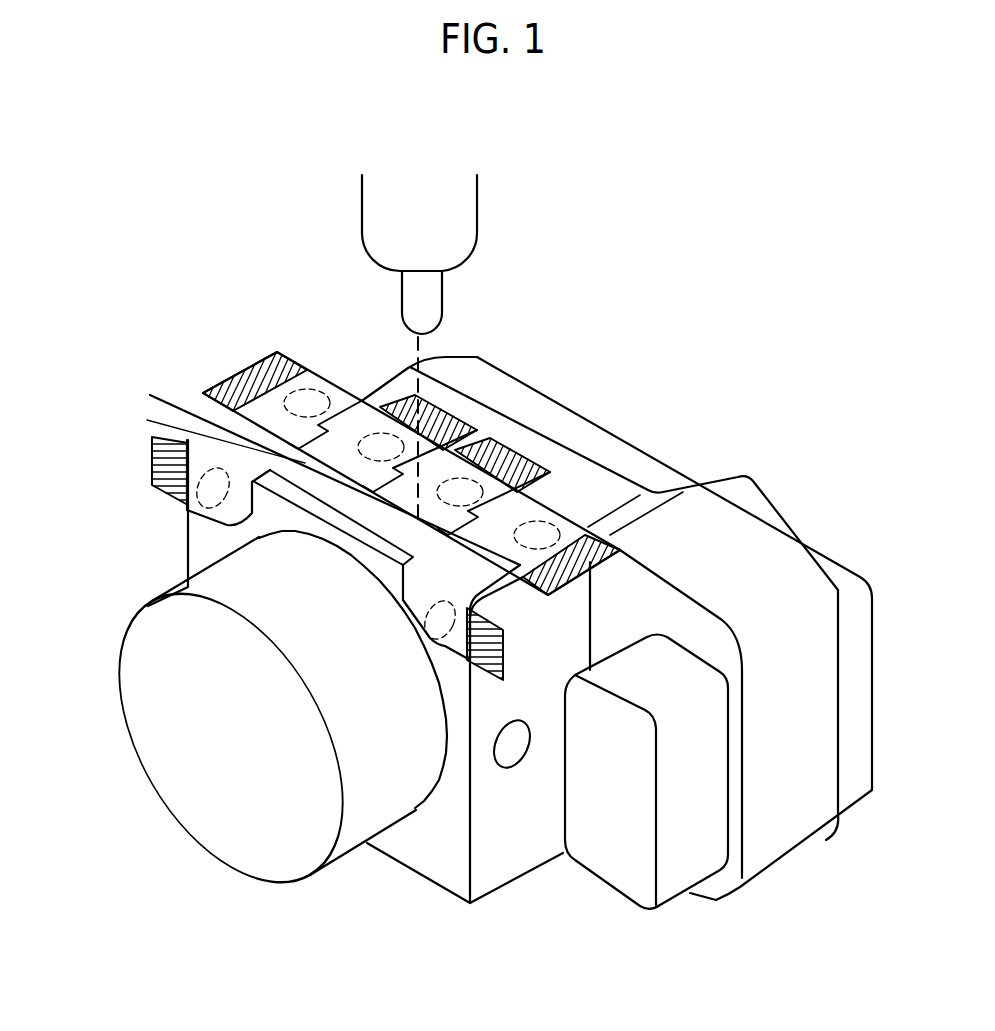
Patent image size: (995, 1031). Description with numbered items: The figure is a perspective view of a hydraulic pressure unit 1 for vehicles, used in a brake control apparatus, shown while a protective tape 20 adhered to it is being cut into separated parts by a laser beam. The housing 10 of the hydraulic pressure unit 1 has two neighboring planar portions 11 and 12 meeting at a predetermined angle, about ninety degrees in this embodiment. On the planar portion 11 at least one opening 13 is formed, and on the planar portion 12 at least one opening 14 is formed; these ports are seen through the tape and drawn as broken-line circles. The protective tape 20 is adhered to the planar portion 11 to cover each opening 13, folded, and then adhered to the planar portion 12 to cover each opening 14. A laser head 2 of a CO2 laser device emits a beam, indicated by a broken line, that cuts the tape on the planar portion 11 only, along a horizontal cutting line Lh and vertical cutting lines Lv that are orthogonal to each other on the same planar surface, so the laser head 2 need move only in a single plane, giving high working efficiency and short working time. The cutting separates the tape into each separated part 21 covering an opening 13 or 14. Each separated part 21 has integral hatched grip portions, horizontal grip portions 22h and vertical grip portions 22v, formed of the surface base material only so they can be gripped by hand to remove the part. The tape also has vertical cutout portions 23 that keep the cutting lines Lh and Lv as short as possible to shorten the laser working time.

The hydraulic pressure unit 1 is at (495, 668).
The laser head 2 is at (463, 197).
The housing 10 is at (540, 875).
The planar portion 11 is at (150, 395).
The planar portion 12 is at (430, 865).
The opening 13 is at (315, 398).
The opening 14 is at (187, 507).
The protective tape 20 is at (562, 512).
The separated part 21 is at (523, 457).
The horizontal grip portion 22h is at (227, 387).
The vertical grip portion 22v is at (440, 427).
The vertical cutout portion 23 is at (522, 517).
The horizontal cutting line Lh is at (147, 420).
The vertical cutting line Lv is at (312, 440).